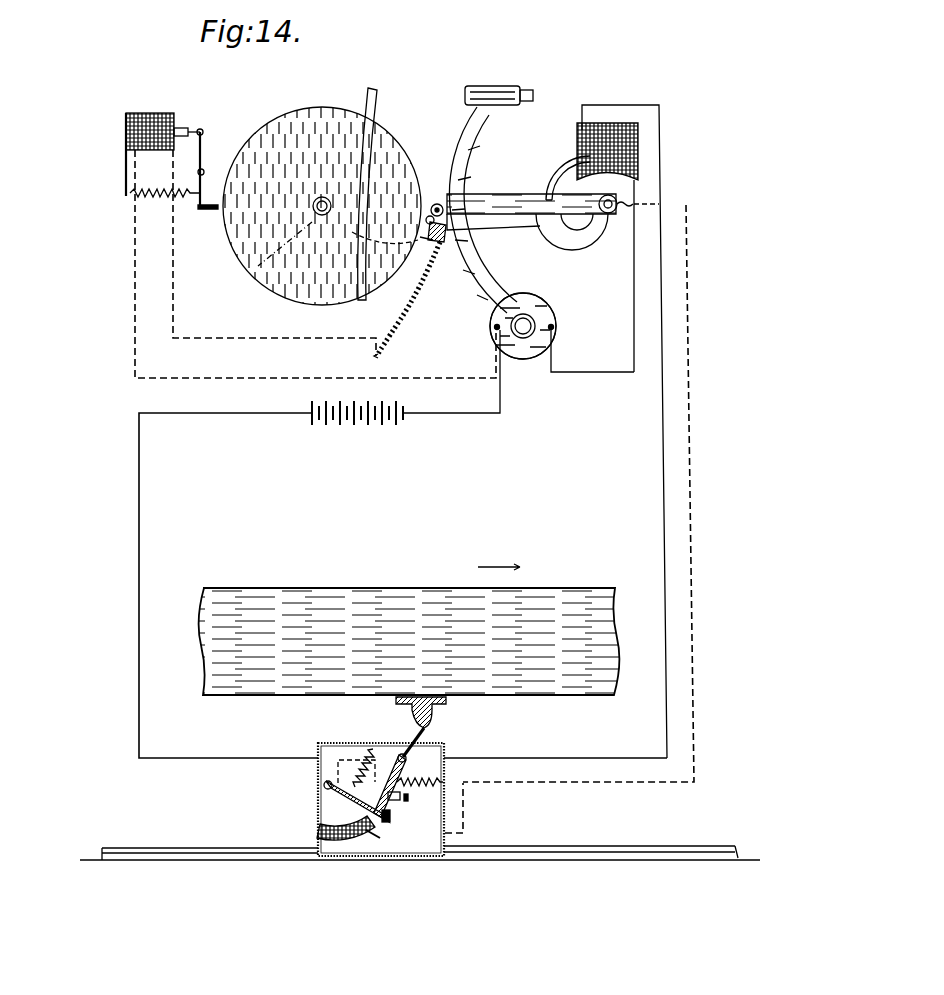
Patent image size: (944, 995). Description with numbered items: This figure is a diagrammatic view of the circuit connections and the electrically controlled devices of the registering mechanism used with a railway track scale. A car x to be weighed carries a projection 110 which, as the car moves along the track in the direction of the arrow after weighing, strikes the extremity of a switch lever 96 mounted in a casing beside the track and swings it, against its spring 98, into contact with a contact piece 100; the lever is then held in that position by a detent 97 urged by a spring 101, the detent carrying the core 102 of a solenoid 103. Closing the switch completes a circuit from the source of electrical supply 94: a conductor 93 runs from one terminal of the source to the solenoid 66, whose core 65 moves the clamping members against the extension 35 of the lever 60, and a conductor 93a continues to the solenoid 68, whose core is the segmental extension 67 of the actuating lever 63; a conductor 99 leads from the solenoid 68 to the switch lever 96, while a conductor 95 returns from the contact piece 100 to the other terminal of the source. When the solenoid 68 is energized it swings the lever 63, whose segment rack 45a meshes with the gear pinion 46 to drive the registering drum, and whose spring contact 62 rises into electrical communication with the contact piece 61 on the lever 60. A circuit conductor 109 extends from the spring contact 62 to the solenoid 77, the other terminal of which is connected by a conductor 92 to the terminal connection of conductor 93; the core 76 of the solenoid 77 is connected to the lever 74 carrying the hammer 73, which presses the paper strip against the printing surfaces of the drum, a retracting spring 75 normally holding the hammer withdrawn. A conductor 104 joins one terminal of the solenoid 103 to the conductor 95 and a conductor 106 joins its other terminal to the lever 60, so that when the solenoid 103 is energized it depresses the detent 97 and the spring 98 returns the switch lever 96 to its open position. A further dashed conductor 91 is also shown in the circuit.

The solenoid 77 is at (123, 135).
The core 76 is at (181, 127).
The lever 74 is at (204, 146).
The hammer 73 is at (210, 209).
The retracting spring 75 is at (153, 194).
The gear pinion 46 is at (256, 269).
The segment rack 45a is at (377, 95).
The extension 35 is at (437, 203).
The contact piece 61 is at (426, 209).
The spring contact 62 is at (424, 225).
The actuating lever 63 is at (418, 268).
The lever 60 is at (507, 196).
The segmental extension 67 is at (558, 162).
The solenoid 68 is at (640, 138).
The conductor 99 is at (661, 181).
The core 65 is at (546, 314).
The conductor 92 is at (494, 329).
The solenoid 66 is at (528, 357).
The conductor 93a is at (603, 372).
The circuit conductor 109 is at (260, 338).
The conductor 91 is at (135, 362).
The source of electrical supply 94 is at (372, 440).
The conductor 93 is at (440, 413).
The conductor 95 is at (140, 548).
The car x is at (392, 590).
The projection 110 is at (432, 713).
The spring 101 is at (357, 772).
The spring 98 is at (447, 764).
The conductor 104 is at (320, 805).
The switch lever 96 is at (392, 799).
The contact piece 100 is at (464, 805).
The conductor 106 is at (582, 783).
The detent 97 is at (387, 824).
The solenoid 103 is at (333, 845).
The core 102 is at (372, 836).